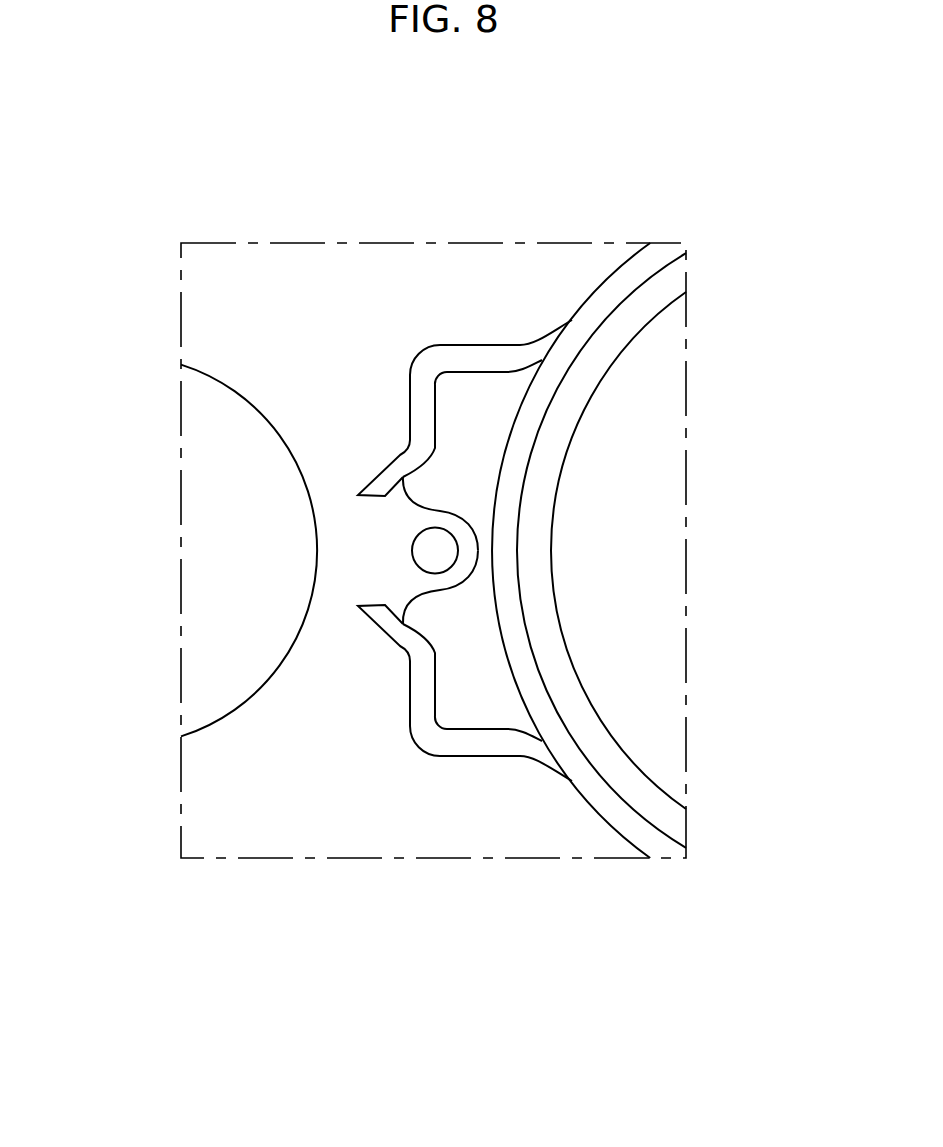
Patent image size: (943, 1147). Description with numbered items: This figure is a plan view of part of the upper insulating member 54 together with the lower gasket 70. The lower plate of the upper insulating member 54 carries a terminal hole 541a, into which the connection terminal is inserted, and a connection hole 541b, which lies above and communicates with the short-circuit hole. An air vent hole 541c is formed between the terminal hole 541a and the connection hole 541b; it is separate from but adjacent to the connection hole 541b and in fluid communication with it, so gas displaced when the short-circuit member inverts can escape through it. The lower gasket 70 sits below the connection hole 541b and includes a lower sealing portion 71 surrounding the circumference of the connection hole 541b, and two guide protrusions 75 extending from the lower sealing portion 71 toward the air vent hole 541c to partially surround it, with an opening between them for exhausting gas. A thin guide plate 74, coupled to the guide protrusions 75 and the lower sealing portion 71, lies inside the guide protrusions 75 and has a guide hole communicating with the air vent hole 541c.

The upper insulating member 54 is at (272, 281).
The terminal hole 541a is at (270, 427).
The connection hole 541b is at (590, 403).
The air vent hole 541c is at (412, 550).
The lower gasket 70 is at (478, 323).
The lower sealing portion 71 is at (615, 808).
The guide plate 74 is at (477, 688).
The guide protrusion 75 is at (500, 740).